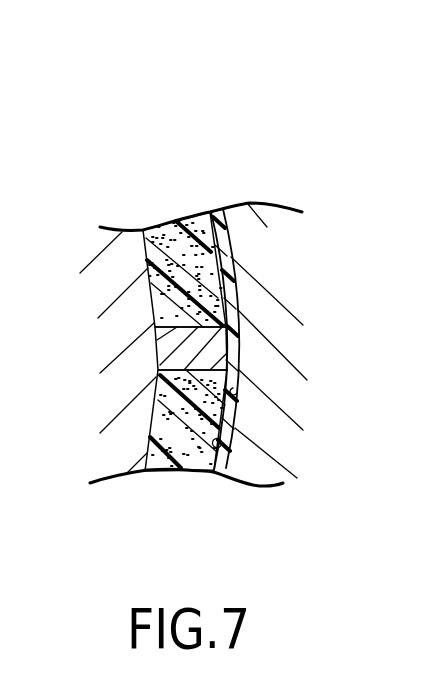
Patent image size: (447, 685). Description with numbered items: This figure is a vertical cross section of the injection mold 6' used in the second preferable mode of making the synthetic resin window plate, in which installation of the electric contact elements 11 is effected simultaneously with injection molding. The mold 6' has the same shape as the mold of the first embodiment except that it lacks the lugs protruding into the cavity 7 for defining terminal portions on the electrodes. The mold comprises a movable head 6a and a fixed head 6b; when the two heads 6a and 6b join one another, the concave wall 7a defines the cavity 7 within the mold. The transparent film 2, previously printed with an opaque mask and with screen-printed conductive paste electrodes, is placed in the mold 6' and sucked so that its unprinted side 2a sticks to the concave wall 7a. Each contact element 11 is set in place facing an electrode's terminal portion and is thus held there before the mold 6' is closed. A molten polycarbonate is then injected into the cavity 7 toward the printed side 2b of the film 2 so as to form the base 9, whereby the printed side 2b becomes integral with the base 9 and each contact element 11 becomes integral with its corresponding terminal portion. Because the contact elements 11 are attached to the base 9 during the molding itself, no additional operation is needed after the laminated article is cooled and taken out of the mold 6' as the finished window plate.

The injection mold 6' is at (227, 265).
The movable head 6a is at (268, 230).
The fixed head 6b is at (93, 248).
The transparent film 2 is at (213, 473).
The film side not printed 2a is at (222, 210).
The printed side of the film 2b is at (225, 452).
The cavity 7 is at (187, 470).
The concave wall 7a is at (238, 395).
The base 9 is at (157, 470).
The electric contact element 11 is at (157, 355).